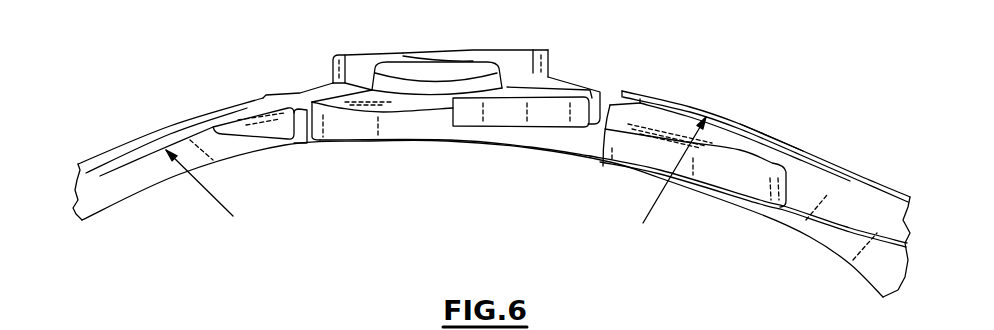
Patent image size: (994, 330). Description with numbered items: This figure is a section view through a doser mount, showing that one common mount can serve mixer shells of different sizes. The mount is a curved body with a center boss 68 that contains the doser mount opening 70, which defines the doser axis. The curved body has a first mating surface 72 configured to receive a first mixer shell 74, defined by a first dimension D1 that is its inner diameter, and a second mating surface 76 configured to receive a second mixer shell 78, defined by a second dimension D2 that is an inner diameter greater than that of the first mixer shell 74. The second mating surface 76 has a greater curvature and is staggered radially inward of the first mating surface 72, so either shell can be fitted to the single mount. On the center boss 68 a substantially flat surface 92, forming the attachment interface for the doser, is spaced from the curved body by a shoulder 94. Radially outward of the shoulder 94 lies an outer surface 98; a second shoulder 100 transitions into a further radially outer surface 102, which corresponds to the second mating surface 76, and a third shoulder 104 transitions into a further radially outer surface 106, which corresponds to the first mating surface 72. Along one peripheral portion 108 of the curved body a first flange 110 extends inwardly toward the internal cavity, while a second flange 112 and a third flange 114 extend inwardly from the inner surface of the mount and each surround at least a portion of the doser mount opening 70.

The center boss 68 is at (362, 62).
The doser mount opening 70 is at (467, 53).
The first mating surface 72 is at (667, 113).
The first mixer shell 74 is at (82, 162).
The second mating surface 76 is at (603, 166).
The second mixer shell 78 is at (852, 168).
The flat surface 92 is at (497, 53).
The shoulder 94 is at (547, 63).
The outer surface 98 is at (570, 83).
The second shoulder 100 is at (603, 92).
The radially outer surface 102 is at (618, 88).
The third shoulder 104 is at (642, 98).
The radially outer surface 106 is at (767, 146).
The peripheral portion 108 is at (799, 197).
The first flange 110 is at (808, 214).
The second flange 112 is at (585, 108).
The third flange 114 is at (302, 118).
The first dimension D1 is at (224, 207).
The second dimension D2 is at (655, 212).